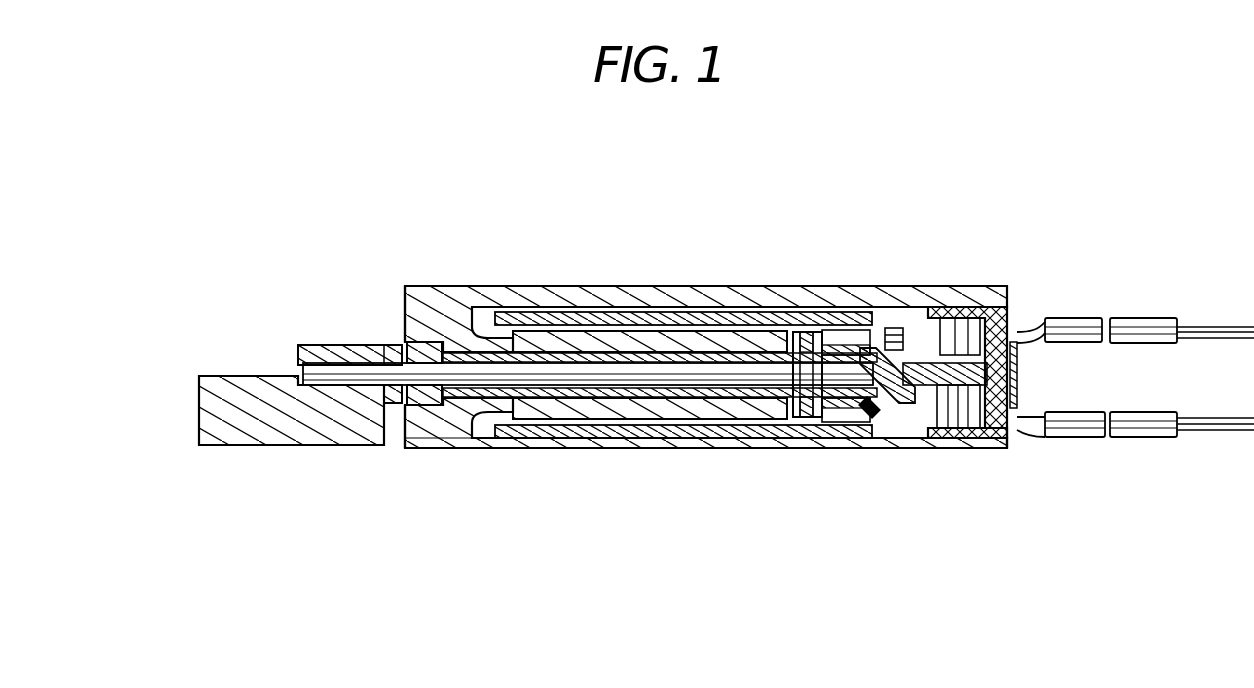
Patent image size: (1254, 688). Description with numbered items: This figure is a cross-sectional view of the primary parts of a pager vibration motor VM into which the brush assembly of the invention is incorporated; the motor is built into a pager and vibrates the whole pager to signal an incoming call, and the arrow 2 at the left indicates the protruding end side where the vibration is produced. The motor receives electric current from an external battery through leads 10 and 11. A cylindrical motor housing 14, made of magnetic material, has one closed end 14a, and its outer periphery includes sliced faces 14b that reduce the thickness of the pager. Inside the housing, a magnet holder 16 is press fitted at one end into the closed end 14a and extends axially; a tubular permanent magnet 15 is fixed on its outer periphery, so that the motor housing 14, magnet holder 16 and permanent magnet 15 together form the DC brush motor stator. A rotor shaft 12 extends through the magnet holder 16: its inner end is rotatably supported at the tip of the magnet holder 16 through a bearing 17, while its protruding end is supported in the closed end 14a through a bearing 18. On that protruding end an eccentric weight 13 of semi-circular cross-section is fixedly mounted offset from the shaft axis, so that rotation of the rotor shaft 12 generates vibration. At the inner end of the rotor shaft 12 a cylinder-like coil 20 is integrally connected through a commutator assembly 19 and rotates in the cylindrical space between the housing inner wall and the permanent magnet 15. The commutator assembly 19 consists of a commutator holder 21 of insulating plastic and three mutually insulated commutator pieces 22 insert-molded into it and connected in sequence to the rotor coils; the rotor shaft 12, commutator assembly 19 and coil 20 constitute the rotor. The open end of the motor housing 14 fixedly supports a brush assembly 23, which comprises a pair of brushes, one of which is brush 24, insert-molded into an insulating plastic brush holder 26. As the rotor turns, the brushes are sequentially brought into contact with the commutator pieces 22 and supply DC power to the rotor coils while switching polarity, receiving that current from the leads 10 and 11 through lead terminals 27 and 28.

The direction of insertion 2 is at (182, 393).
The lead 10 is at (1162, 327).
The lead 11 is at (1152, 423).
The rotor shaft 12 is at (330, 370).
The eccentric weight 13 is at (237, 392).
The motor housing 14 is at (680, 280).
The closed end 14a is at (415, 286).
The sliced face 14b is at (567, 448).
The permanent magnet 15 is at (598, 340).
The magnet holder 16 is at (433, 447).
The bearing 17 is at (795, 332).
The bearing 18 is at (423, 343).
The commutator assembly 19 is at (894, 318).
The coil 20 is at (640, 430).
The commutator holder 21 is at (838, 415).
The commutator pieces 22 is at (945, 318).
The brush assembly 23 is at (1016, 307).
The brush 24 is at (935, 415).
The brush holder 26 is at (1007, 450).
The lead terminal 27 is at (1023, 340).
The lead terminal 28 is at (1023, 415).
The pager vibration motor VM is at (452, 255).